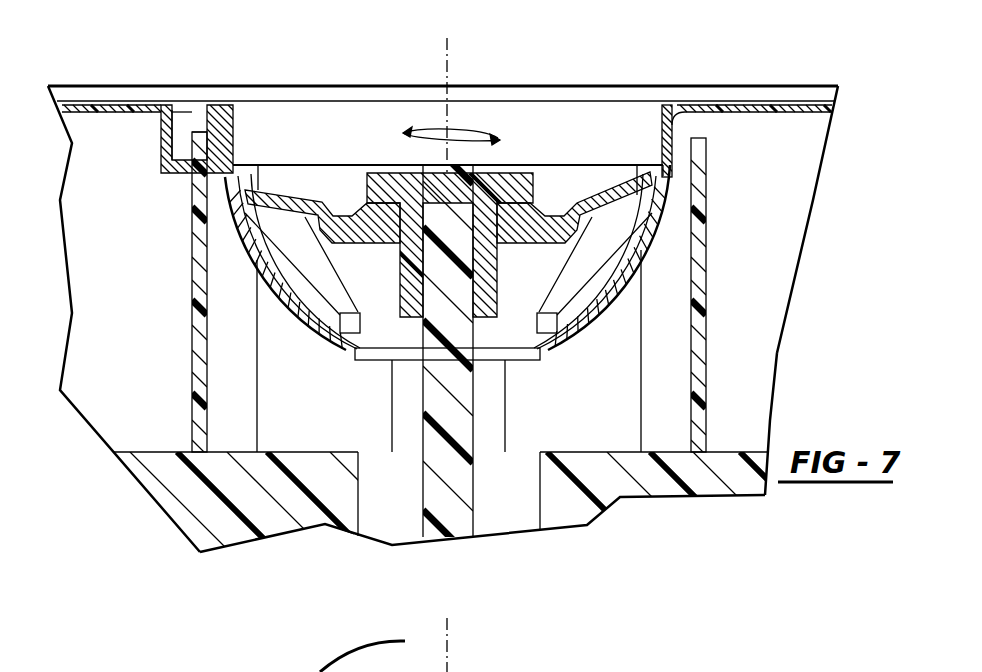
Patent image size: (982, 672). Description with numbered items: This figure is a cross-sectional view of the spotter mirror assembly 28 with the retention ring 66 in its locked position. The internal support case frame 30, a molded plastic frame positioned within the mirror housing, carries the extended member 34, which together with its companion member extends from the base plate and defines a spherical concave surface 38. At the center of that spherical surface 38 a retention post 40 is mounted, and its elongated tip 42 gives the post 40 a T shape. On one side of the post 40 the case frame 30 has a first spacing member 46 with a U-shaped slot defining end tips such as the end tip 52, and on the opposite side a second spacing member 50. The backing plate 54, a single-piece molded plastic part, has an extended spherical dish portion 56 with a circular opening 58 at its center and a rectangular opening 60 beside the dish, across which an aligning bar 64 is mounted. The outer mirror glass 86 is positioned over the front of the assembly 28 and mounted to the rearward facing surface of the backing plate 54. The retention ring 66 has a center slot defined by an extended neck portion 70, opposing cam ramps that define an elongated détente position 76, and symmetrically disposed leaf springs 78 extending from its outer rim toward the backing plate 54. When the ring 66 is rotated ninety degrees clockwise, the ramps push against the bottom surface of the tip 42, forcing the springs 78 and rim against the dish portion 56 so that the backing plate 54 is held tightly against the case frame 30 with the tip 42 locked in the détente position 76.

The spotter mirror assembly 28 is at (672, 76).
The case frame 30 is at (689, 505).
The extended member 34 is at (343, 413).
The spherical concave surface 38 is at (303, 327).
The retention post 40 is at (484, 330).
The elongated tip 42 is at (514, 176).
The first spacing member 46 is at (190, 377).
The second spacing member 50 is at (708, 328).
The end tip 52 is at (210, 140).
The backing plate 54 is at (785, 118).
The spherical dish portion 56 is at (583, 318).
The circular opening 58 is at (487, 355).
The rectangular opening 60 is at (170, 138).
The aligning bar 64 is at (180, 172).
The retention ring 66 is at (667, 178).
The extended neck portion 70 is at (407, 267).
The détente position 76 is at (340, 188).
The leaf springs 78 is at (587, 260).
The outer mirror glass 86 is at (183, 98).